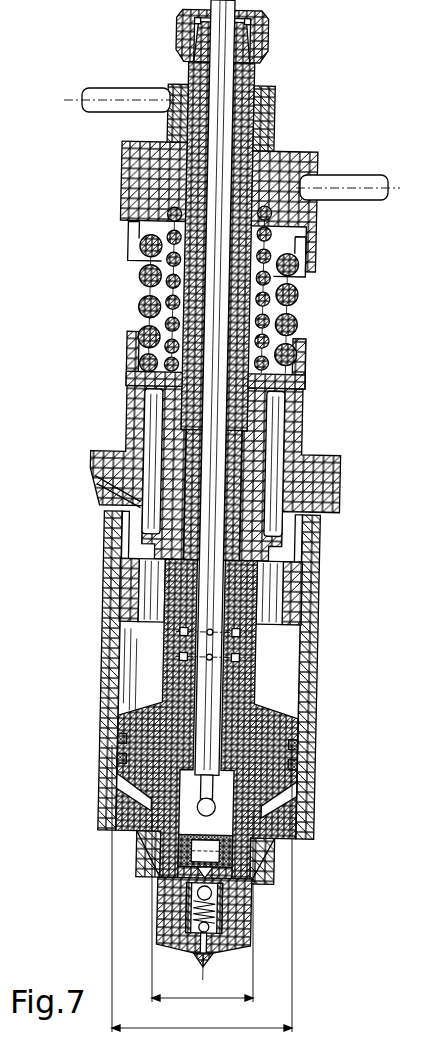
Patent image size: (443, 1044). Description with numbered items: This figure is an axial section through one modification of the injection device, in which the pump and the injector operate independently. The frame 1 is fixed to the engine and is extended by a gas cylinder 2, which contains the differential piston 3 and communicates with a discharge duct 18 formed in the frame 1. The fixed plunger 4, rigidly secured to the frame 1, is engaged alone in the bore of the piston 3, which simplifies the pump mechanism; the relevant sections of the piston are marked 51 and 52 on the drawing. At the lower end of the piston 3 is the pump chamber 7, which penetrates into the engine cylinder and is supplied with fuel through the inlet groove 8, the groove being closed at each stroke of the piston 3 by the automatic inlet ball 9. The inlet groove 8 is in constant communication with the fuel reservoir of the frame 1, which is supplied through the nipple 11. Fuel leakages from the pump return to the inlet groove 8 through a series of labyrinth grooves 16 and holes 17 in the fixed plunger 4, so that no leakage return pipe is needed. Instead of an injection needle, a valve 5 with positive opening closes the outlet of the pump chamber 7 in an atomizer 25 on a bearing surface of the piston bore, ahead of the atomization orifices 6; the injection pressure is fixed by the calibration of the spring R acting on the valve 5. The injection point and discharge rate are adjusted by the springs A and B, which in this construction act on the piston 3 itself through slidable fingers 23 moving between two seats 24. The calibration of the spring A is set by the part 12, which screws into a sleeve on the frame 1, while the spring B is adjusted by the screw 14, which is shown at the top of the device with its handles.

The frame 1 is at (127, 462).
The gas cylinder 2 is at (105, 692).
The differential piston 3 is at (148, 747).
The fixed plunger 4 is at (180, 535).
The valve 5 is at (183, 885).
The atomization orifices 6 is at (197, 960).
The pump chamber 7 is at (182, 840).
The inlet groove 8 is at (208, 495).
The automatic inlet ball 9 is at (187, 798).
The nipple 11 is at (200, 42).
The adjusting part 12 is at (167, 137).
The screw 14 is at (135, 178).
The labyrinth grooves 16 is at (183, 657).
The holes 17 is at (183, 630).
The discharge duct 18 is at (140, 510).
The slidable fingers 23 is at (127, 390).
The seats 24 is at (130, 353).
The atomizer 25 is at (177, 898).
The spring A is at (140, 275).
The spring B is at (140, 238).
The spring R is at (187, 920).
The dimension 51 is at (202, 908).
The dimension 52 is at (202, 889).